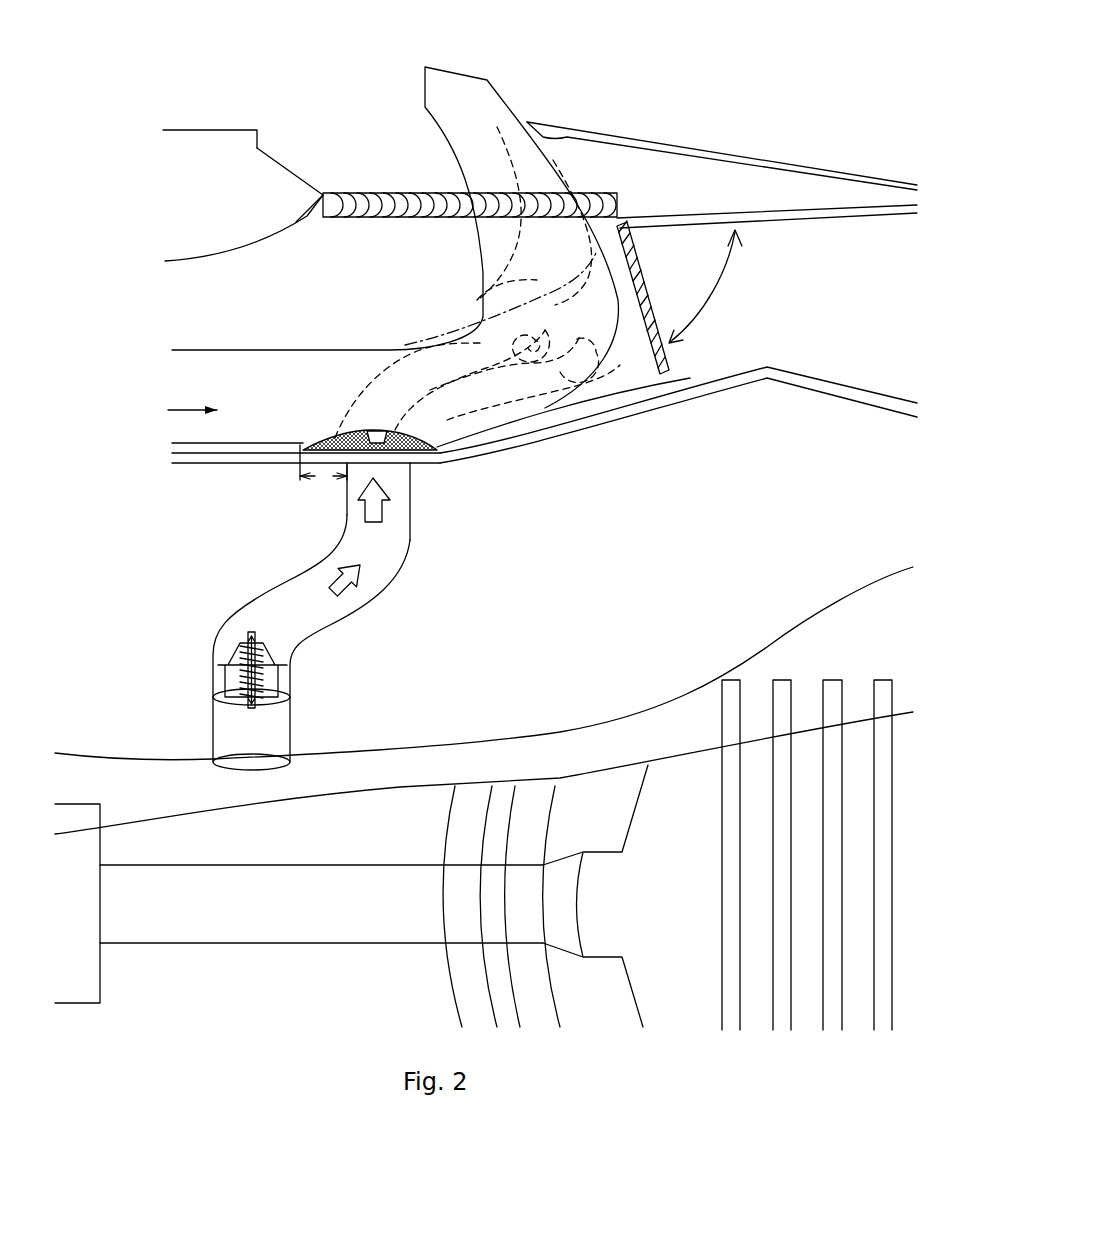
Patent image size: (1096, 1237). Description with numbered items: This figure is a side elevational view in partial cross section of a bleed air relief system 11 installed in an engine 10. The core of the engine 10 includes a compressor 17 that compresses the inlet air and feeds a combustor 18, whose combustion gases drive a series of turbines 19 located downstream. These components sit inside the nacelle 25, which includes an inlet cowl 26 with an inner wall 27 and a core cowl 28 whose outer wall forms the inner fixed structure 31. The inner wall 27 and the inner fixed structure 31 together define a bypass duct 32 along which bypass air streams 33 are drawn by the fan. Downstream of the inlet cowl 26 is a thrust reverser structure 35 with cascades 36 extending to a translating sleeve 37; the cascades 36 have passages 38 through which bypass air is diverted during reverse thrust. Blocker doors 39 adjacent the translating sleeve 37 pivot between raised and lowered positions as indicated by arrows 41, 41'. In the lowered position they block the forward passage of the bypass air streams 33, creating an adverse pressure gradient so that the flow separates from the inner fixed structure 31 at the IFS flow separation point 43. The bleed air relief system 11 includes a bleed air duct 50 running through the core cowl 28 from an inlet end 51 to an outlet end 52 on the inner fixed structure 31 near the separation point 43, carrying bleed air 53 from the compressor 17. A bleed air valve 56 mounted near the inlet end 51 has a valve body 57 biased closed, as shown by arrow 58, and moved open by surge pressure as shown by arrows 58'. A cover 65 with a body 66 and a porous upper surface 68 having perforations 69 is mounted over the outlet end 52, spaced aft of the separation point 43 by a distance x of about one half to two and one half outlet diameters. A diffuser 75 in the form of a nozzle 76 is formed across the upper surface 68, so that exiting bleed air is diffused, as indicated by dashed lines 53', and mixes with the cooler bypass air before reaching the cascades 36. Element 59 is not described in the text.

The engine 10 is at (223, 82).
The bleed air relief system 11 is at (512, 555).
The compressor 17 is at (92, 797).
The combustor 18 is at (588, 795).
The turbines 19 is at (778, 680).
The nacelle 25 is at (180, 228).
The inlet cowl 26 is at (223, 214).
The inner wall 27 is at (270, 250).
The core cowl 28 is at (170, 477).
The inner fixed structure 31 is at (198, 463).
The bypass duct 32 is at (197, 308).
The bypass air streams 33 is at (473, 117).
The thrust reverser structure 35 is at (593, 120).
The cascades 36 is at (342, 183).
The translating sleeve 37 is at (717, 150).
The passages 38 is at (387, 193).
The blocker doors 39 is at (637, 260).
The arrow 41 is at (738, 286).
The arrow 41' is at (742, 336).
The IFS flow separation point 43 is at (300, 477).
The bleed air duct 50 is at (367, 610).
The inlet end 51 is at (292, 747).
The outlet end 52 is at (397, 463).
The bleed air 53 is at (408, 537).
The diffused bleed air 53' is at (501, 294).
The bleed air valve 56 is at (214, 672).
The valve body 57 is at (277, 672).
The arrow 58 is at (289, 663).
The arrows 58' is at (294, 686).
The valve seat 59 is at (228, 702).
The cover 65 is at (333, 433).
The body 66 is at (347, 508).
The upper surface 68 is at (404, 432).
The perforations 69 is at (427, 448).
The diffuser 75 is at (367, 433).
The nozzle 76 is at (363, 423).